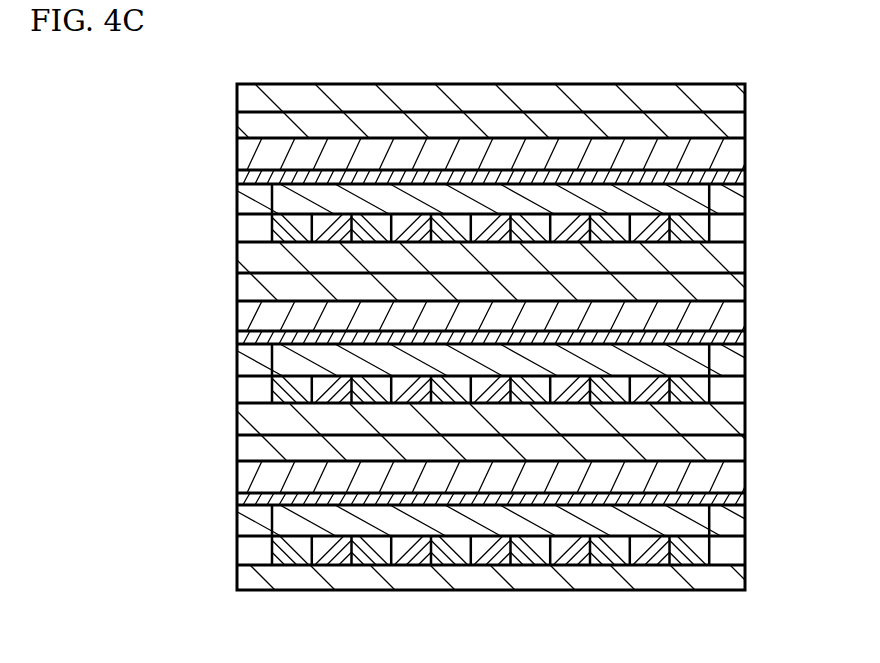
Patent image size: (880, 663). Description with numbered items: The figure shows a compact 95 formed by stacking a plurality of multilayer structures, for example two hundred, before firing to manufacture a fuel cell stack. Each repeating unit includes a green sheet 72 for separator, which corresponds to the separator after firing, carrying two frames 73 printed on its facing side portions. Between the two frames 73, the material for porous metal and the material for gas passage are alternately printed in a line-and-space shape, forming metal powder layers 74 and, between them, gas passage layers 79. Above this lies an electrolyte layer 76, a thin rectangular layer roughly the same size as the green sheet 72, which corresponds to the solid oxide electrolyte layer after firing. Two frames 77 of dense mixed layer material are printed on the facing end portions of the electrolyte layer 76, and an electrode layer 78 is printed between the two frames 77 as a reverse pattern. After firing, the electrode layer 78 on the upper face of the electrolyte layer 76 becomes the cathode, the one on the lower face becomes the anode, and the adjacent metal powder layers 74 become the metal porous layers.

The compact 95 is at (266, 72).
The green sheet for separator 72 is at (728, 97).
The frame 73 is at (243, 133).
The frame 77 is at (737, 158).
The electrolyte layer 76 is at (243, 176).
The electrode layer 78 is at (700, 197).
The metal powder layer 74 is at (417, 553).
The gas passage layer 79 is at (537, 550).